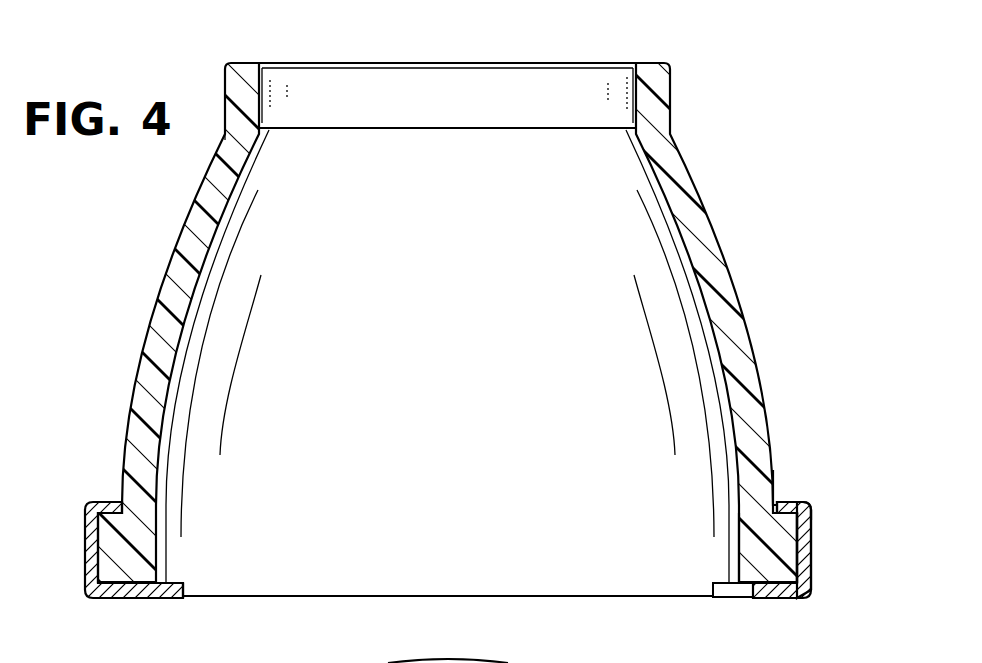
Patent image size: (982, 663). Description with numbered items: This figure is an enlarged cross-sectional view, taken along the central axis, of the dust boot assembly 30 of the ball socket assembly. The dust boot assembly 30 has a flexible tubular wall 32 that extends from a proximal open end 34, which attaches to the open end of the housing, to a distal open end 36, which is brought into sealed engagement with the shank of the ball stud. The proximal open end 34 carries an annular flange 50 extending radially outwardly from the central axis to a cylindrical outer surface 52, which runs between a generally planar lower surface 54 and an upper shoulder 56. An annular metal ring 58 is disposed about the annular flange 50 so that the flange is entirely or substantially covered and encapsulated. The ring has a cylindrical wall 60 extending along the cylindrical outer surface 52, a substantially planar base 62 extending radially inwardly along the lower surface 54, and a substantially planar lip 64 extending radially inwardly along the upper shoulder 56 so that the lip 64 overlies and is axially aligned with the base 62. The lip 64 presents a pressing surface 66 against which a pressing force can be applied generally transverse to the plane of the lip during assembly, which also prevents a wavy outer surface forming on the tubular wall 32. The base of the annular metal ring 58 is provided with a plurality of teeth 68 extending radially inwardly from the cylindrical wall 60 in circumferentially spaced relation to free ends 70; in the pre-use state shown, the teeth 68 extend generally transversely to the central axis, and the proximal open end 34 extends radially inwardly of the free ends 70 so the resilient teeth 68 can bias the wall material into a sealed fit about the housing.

The dust boot assembly 30 is at (825, 279).
The tubular wall 32 is at (670, 175).
The proximal open end 34 is at (198, 598).
The distal open end 36 is at (245, 62).
The annular flange 50 is at (783, 553).
The cylindrical outer surface 52 is at (805, 575).
The lower surface 54 is at (777, 598).
The upper shoulder 56 is at (790, 502).
The annular metal ring 58 is at (814, 500).
The cylindrical wall 60 is at (812, 515).
The base 62 is at (803, 598).
The lip 64 is at (780, 500).
The pressing surface 66 is at (804, 500).
The teeth 68 is at (163, 598).
The free ends 70 is at (185, 592).